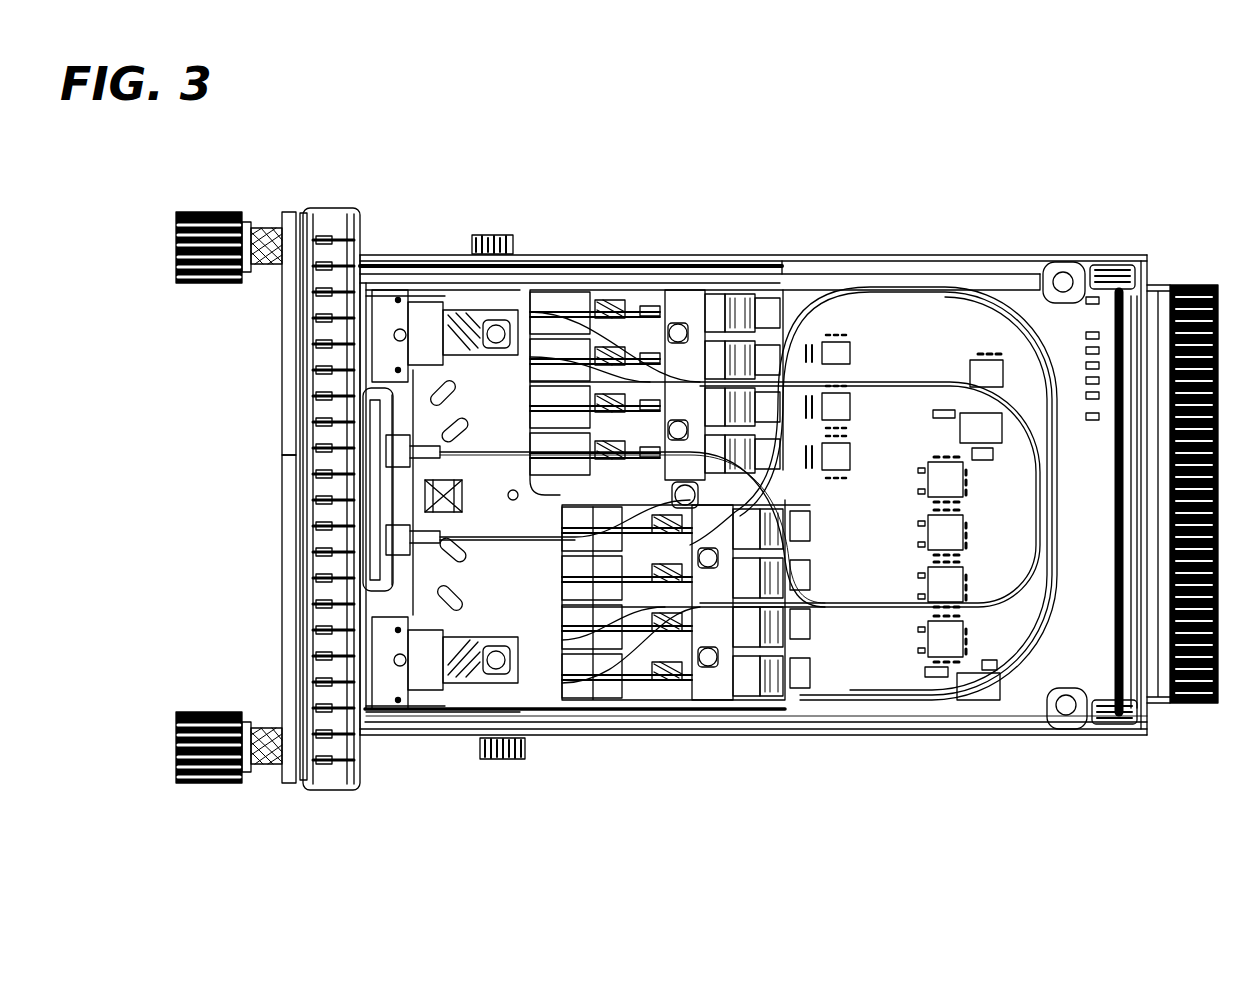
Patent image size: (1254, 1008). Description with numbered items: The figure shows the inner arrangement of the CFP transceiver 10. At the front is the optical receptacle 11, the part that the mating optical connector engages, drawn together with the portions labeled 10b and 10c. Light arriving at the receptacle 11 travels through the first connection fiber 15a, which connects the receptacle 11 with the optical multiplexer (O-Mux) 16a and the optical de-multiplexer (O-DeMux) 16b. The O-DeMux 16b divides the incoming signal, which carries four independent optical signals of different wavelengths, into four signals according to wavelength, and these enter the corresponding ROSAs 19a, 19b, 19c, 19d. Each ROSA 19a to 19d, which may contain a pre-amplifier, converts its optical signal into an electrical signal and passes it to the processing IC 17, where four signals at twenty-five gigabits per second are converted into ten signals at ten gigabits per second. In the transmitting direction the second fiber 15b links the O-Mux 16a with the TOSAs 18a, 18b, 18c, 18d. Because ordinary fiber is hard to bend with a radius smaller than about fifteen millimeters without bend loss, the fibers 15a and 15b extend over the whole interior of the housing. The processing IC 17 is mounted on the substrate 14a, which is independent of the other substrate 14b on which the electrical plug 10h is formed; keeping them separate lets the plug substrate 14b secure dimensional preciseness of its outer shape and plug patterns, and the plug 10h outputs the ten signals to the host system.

The optical transceiver module / card 10 is at (1058, 187).
The electrical plug 10h is at (1185, 283).
The front panel opening (upper) 10b is at (283, 441).
The front panel opening (lower) 10c is at (283, 547).
The optical receptacle 11 is at (108, 432).
The substrate 14a is at (997, 718).
The substrate 14b is at (1163, 705).
The first connection fiber 15a is at (517, 545).
The second fiber 15b is at (1018, 688).
The optical multiplexer (O-Mux) 16a is at (377, 330).
The optical de-multiplexer (O-DeMux) 16b is at (383, 680).
The processing IC (Rx and Tx-IC) 17 is at (872, 296).
The TOSA 18a is at (728, 710).
The TOSA 18b is at (686, 578).
The TOSA 18c is at (686, 627).
The TOSA 18d is at (686, 600).
The ROSA 19a is at (720, 300).
The ROSA 19b is at (655, 360).
The ROSA 19c is at (655, 407).
The ROSA 19d is at (656, 399).